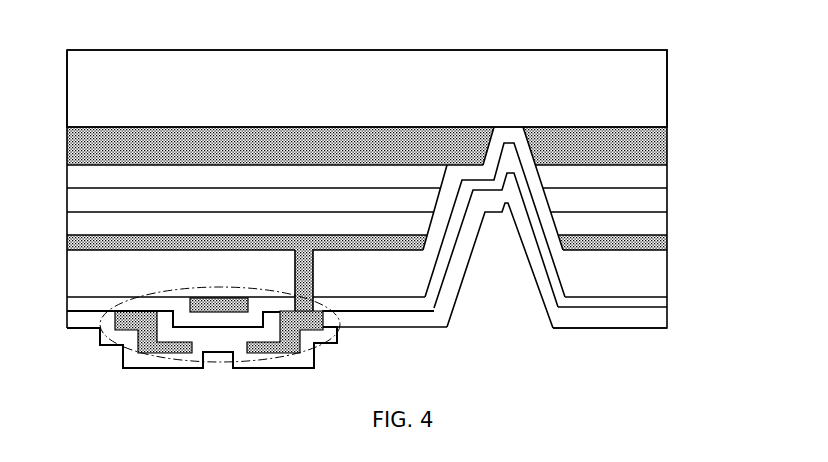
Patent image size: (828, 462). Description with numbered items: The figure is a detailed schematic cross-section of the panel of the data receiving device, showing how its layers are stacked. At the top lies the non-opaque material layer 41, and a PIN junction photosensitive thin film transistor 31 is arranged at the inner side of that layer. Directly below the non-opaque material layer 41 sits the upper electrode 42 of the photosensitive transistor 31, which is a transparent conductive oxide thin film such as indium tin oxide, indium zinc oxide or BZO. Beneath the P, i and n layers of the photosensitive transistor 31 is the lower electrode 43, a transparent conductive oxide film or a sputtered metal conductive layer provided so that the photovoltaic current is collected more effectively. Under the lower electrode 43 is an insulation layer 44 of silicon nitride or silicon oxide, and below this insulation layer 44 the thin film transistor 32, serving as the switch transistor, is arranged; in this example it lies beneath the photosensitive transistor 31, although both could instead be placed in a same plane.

The non-opaque material layer 41 is at (655, 102).
The upper electrode 42 is at (658, 148).
The photosensitive transistor 31 is at (668, 163).
The lower electrode 43 is at (658, 243).
The insulation layer 44 is at (657, 270).
The thin film transistor 32 is at (105, 342).